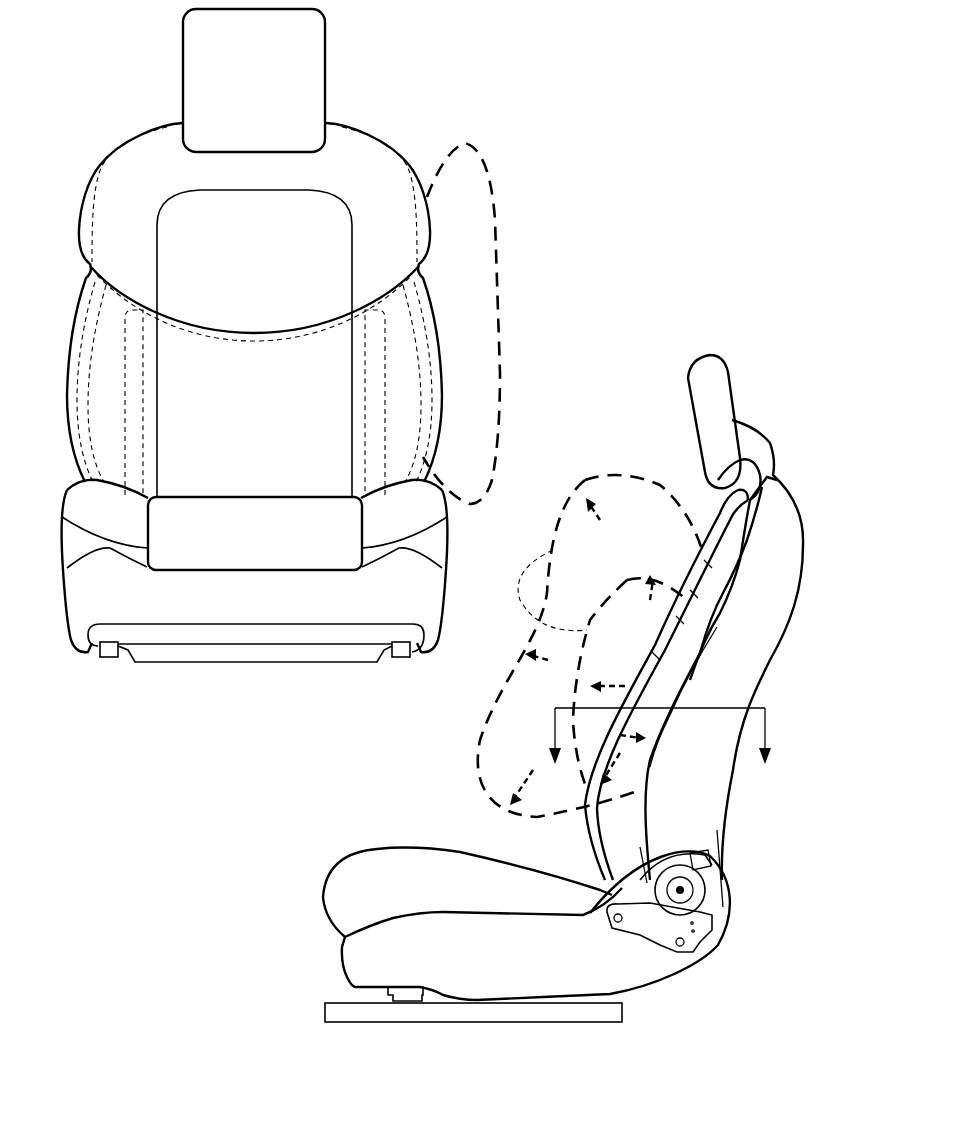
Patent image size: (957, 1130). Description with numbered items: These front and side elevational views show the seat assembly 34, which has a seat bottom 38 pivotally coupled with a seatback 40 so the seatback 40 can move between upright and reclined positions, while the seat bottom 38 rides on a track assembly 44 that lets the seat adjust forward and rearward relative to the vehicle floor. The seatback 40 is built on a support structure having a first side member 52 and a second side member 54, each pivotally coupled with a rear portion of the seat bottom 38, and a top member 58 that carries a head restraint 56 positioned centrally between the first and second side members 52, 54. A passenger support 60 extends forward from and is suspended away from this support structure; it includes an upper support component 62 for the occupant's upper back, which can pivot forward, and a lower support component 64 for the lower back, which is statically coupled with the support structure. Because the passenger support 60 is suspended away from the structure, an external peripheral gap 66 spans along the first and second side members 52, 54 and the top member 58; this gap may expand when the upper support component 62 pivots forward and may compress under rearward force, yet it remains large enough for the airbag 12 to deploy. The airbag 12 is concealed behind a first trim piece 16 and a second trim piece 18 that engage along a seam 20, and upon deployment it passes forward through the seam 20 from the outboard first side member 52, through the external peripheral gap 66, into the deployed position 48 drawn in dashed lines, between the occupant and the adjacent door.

In FIG. 3, the airbag 12 is at (475, 286).
In FIG. 4, the airbag 12 is at (582, 651).
In FIG. 4, the first trim piece 16 is at (733, 595).
In FIG. 4, the second trim piece 18 is at (705, 808).
In FIG. 4, the seam 20 is at (717, 632).
In FIG. 3, the seat assembly 34 is at (114, 80).
In FIG. 4, the seat assembly 34 is at (412, 770).
In FIG. 3, the seat bottom 38 is at (262, 539).
In FIG. 4, the seat bottom 38 is at (419, 896).
In FIG. 3, the seatback 40 is at (262, 286).
In FIG. 3, the track assembly 44 is at (106, 660).
In FIG. 4, the track assembly 44 is at (335, 1003).
In FIG. 3, the deployed position 48 is at (480, 113).
In FIG. 4, the deployed position 48 is at (625, 572).
In FIG. 3, the first side member 52 is at (423, 362).
In FIG. 4, the first side member 52 is at (790, 553).
In FIG. 3, the second side member 54 is at (88, 300).
In FIG. 3, the head restraint 56 is at (262, 86).
In FIG. 4, the head restraint 56 is at (715, 421).
In FIG. 3, the top member 58 is at (357, 153).
In FIG. 3, the passenger support 60 is at (233, 302).
In FIG. 4, the passenger support 60 is at (640, 621).
In FIG. 3, the upper support component 62 is at (100, 173).
In FIG. 4, the upper support component 62 is at (727, 545).
In FIG. 3, the lower support component 64 is at (72, 345).
In FIG. 4, the lower support component 64 is at (597, 830).
In FIG. 4, the external peripheral gap 66 is at (617, 733).